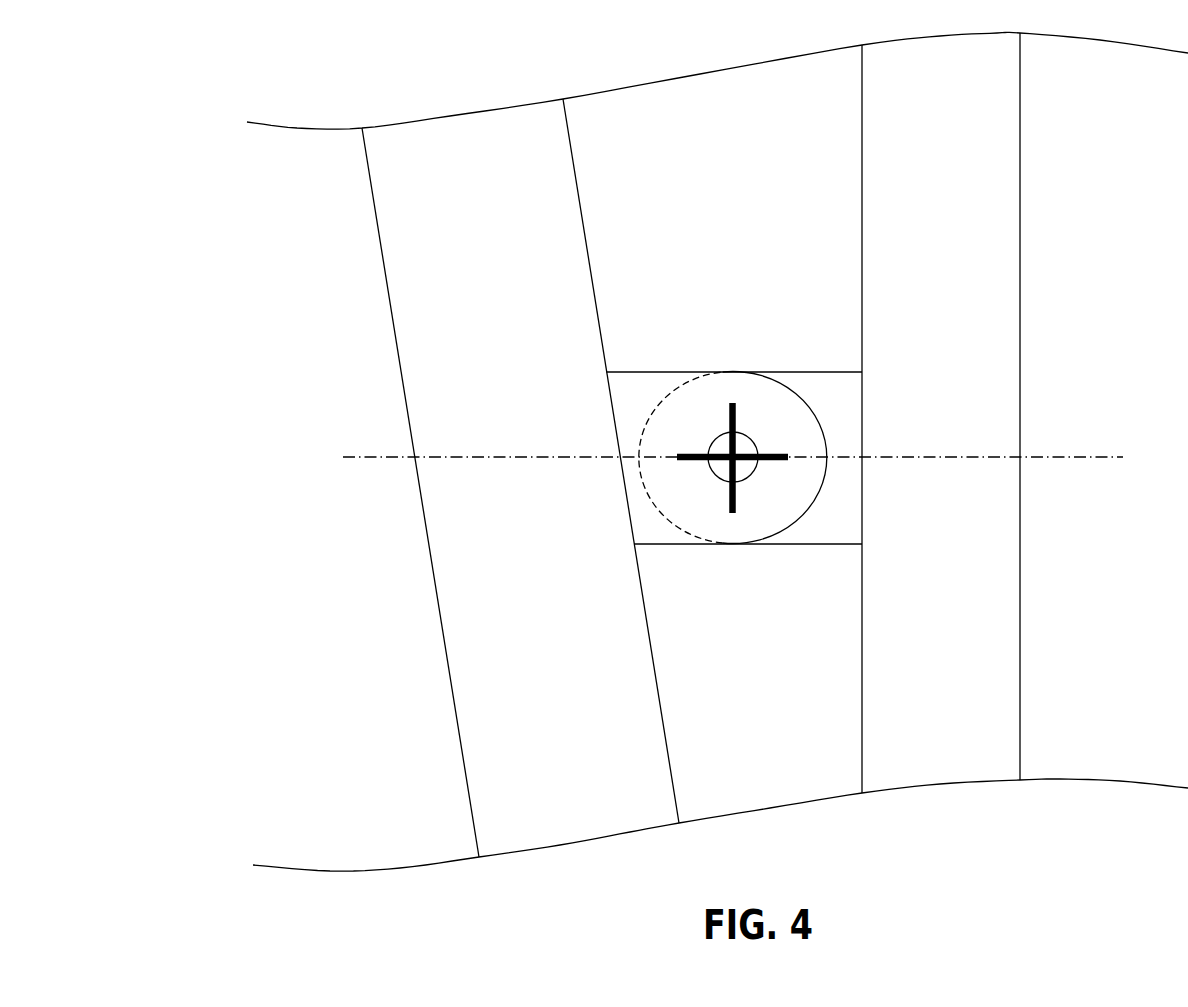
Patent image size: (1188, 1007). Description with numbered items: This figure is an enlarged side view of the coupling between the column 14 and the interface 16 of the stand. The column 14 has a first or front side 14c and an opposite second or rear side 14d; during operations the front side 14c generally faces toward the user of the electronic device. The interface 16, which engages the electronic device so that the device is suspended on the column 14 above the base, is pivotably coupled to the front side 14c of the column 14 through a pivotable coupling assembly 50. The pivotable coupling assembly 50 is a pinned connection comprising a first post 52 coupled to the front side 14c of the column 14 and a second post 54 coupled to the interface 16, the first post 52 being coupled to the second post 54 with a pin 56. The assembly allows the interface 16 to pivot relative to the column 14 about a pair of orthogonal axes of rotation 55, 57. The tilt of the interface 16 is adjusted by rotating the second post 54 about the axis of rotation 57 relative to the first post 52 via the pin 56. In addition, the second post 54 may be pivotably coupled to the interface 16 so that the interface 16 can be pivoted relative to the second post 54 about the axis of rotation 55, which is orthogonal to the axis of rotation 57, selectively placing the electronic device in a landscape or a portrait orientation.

The column 14 is at (430, 560).
The front side 14c is at (585, 166).
The rear side 14d is at (370, 249).
The interface 16 is at (1022, 160).
The pivotable coupling assembly 50 is at (734, 306).
The first post 52 is at (665, 545).
The second post 54 is at (834, 371).
The axis of rotation 55 is at (540, 457).
The pin 56 is at (752, 475).
The axis of rotation 57 is at (736, 414).